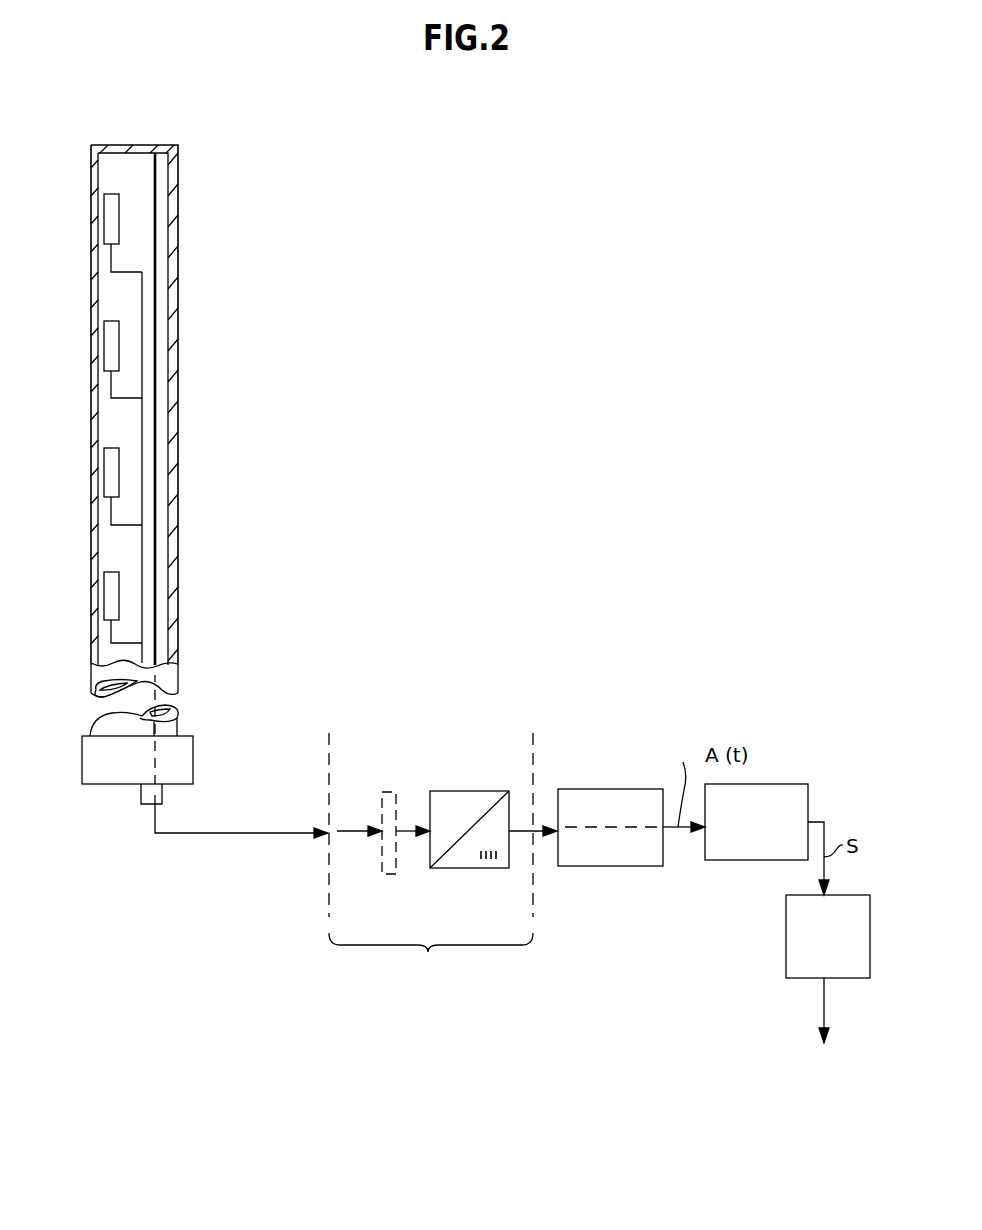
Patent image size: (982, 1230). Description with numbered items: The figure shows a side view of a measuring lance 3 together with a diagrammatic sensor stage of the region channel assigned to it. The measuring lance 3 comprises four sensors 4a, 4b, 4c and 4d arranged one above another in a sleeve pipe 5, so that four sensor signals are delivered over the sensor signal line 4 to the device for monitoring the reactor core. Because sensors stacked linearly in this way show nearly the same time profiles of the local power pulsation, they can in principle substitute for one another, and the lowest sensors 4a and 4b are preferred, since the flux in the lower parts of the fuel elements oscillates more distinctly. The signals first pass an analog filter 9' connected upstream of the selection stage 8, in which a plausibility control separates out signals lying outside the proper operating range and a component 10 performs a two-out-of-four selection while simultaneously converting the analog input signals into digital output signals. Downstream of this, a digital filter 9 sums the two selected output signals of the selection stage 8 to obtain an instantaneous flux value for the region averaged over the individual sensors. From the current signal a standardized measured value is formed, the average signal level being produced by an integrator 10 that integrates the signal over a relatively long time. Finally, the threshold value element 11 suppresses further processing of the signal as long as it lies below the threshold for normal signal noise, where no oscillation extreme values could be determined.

The measuring lance 3 is at (185, 218).
The sleeve pipe 5 is at (179, 357).
The sensor 4a is at (108, 598).
The sensor 4b is at (108, 472).
The sensor 4c is at (108, 347).
The sensor 4d is at (108, 218).
The sensor signal line 4 is at (240, 826).
The selection stage 8 is at (431, 857).
The analog filter 9' is at (383, 805).
The component / integrator 10 is at (452, 791).
The digital filter 9 is at (631, 798).
The threshold value element 11 is at (786, 927).